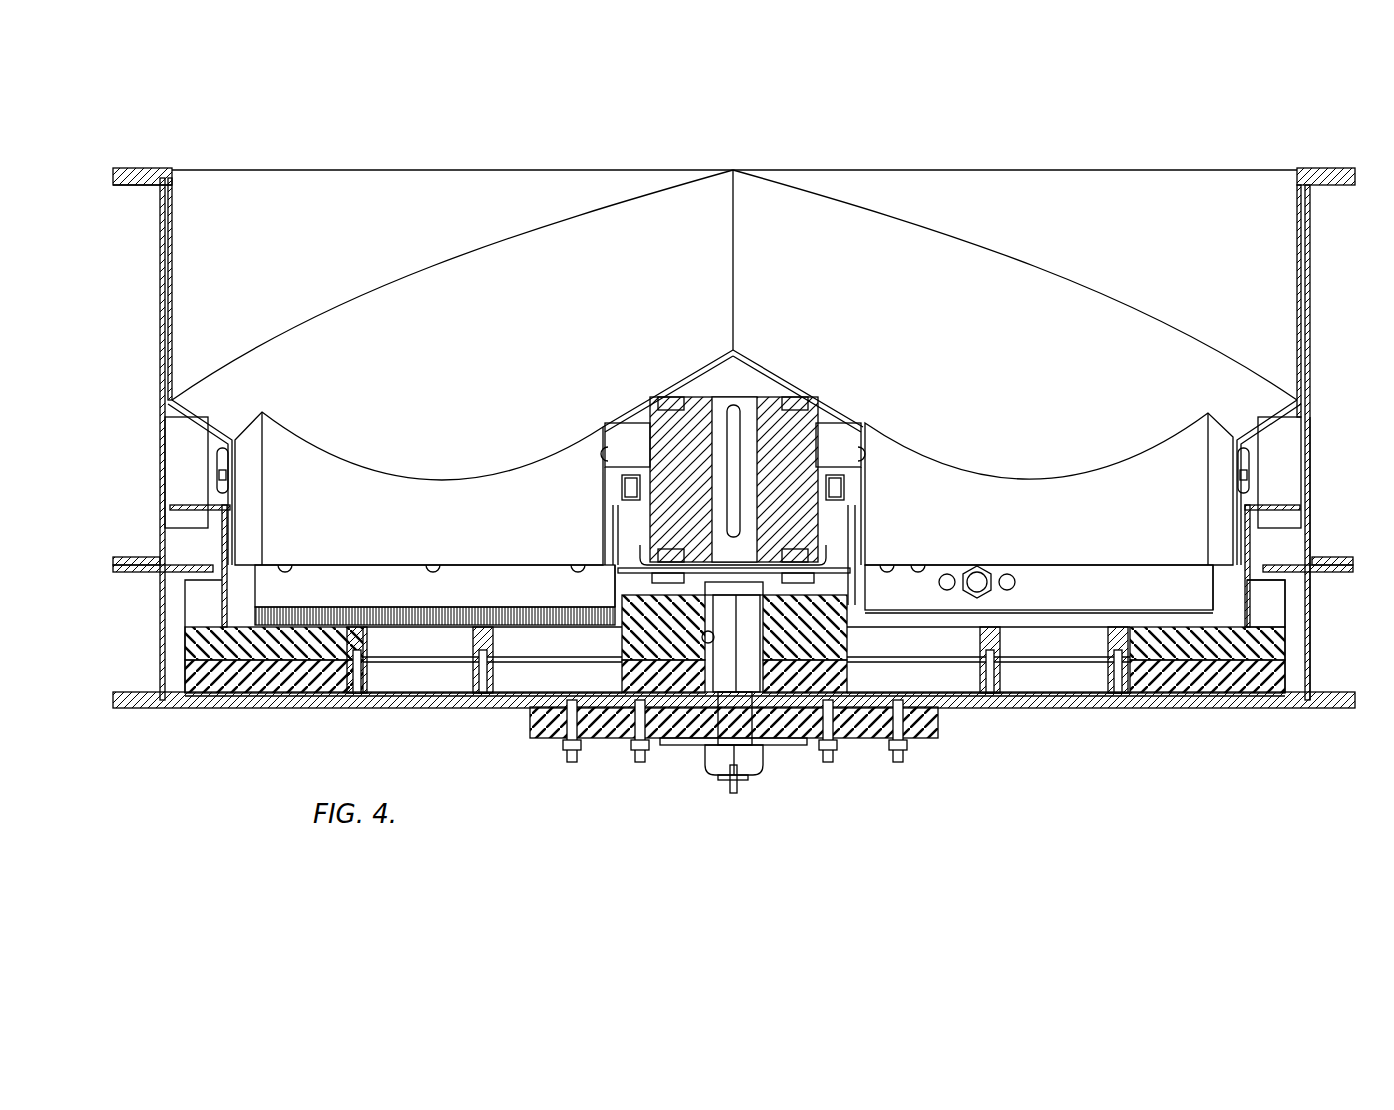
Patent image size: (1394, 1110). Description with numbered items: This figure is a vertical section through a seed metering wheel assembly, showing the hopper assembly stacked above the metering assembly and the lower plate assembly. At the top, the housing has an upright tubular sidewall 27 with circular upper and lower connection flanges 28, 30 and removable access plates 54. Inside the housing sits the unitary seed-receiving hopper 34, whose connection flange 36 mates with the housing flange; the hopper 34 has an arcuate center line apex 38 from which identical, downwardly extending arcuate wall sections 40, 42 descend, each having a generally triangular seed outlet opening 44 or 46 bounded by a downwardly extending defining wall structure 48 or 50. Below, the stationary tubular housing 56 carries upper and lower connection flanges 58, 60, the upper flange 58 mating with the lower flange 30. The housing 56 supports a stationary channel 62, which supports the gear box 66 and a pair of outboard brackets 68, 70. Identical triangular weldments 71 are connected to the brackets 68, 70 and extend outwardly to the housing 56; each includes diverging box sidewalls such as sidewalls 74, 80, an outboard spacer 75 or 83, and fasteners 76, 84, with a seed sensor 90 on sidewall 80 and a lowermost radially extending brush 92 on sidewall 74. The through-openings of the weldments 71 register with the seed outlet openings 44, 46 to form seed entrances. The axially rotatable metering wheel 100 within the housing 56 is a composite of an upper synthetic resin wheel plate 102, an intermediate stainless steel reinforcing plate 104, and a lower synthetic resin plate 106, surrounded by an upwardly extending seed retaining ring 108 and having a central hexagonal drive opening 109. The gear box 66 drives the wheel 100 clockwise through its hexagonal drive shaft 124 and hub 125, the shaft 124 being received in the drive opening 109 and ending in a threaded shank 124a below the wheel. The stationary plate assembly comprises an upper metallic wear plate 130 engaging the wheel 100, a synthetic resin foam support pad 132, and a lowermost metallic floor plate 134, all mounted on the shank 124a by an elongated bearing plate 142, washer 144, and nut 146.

The upright tubular sidewall 27 is at (160, 300).
The upper connection flange 28 is at (140, 186).
The lower connection flange 30 is at (135, 558).
The seed-receiving hopper 34 is at (412, 185).
The connection flange 36 is at (133, 175).
The arcuate center line apex 38 is at (734, 232).
The arcuate wall section 40 is at (1015, 285).
The arcuate wall section 42 is at (452, 285).
The seed outlet opening 44 is at (1160, 460).
The seed outlet opening 46 is at (310, 462).
The defining wall structure 48 is at (1150, 560).
The defining wall structure 50 is at (315, 560).
The removable access plate 54 is at (165, 440).
The tubular housing 56 is at (1310, 665).
The upper connection flange 58 is at (1350, 575).
The lower connection flange 60 is at (1352, 693).
The stationary channel 62 is at (827, 535).
The gear box 66 is at (800, 440).
The outboard bracket 68 is at (620, 445).
The outboard bracket 70 is at (865, 445).
The triangular weldment 71 is at (218, 596).
The box sidewall 74 is at (510, 578).
The outboard spacer 75 is at (230, 530).
The fastener 76 is at (222, 497).
The box sidewall 80 is at (1082, 590).
The outboard spacer 83 is at (1245, 533).
The fastener 84 is at (1258, 495).
The seed sensor 90 is at (977, 580).
The brush 92 is at (460, 607).
The metering wheel 100 is at (1300, 631).
The upper synthetic resin wheel plate 102 is at (1108, 633).
The intermediate stainless steel reinforcing plate 104 is at (1055, 696).
The lower synthetic resin plate 106 is at (1165, 705).
The seed retaining ring 108 is at (1288, 605).
The central hexagonal drive opening 109 is at (703, 637).
The drive shaft 124 is at (752, 673).
The threaded shank 124a is at (740, 790).
The hub 125 is at (850, 615).
The wear plate 130 is at (422, 705).
The foam support pad 132 is at (300, 707).
The floor plate 134 is at (195, 708).
The bearing plate 142 is at (598, 752).
The washer 144 is at (678, 746).
The nut 146 is at (705, 772).